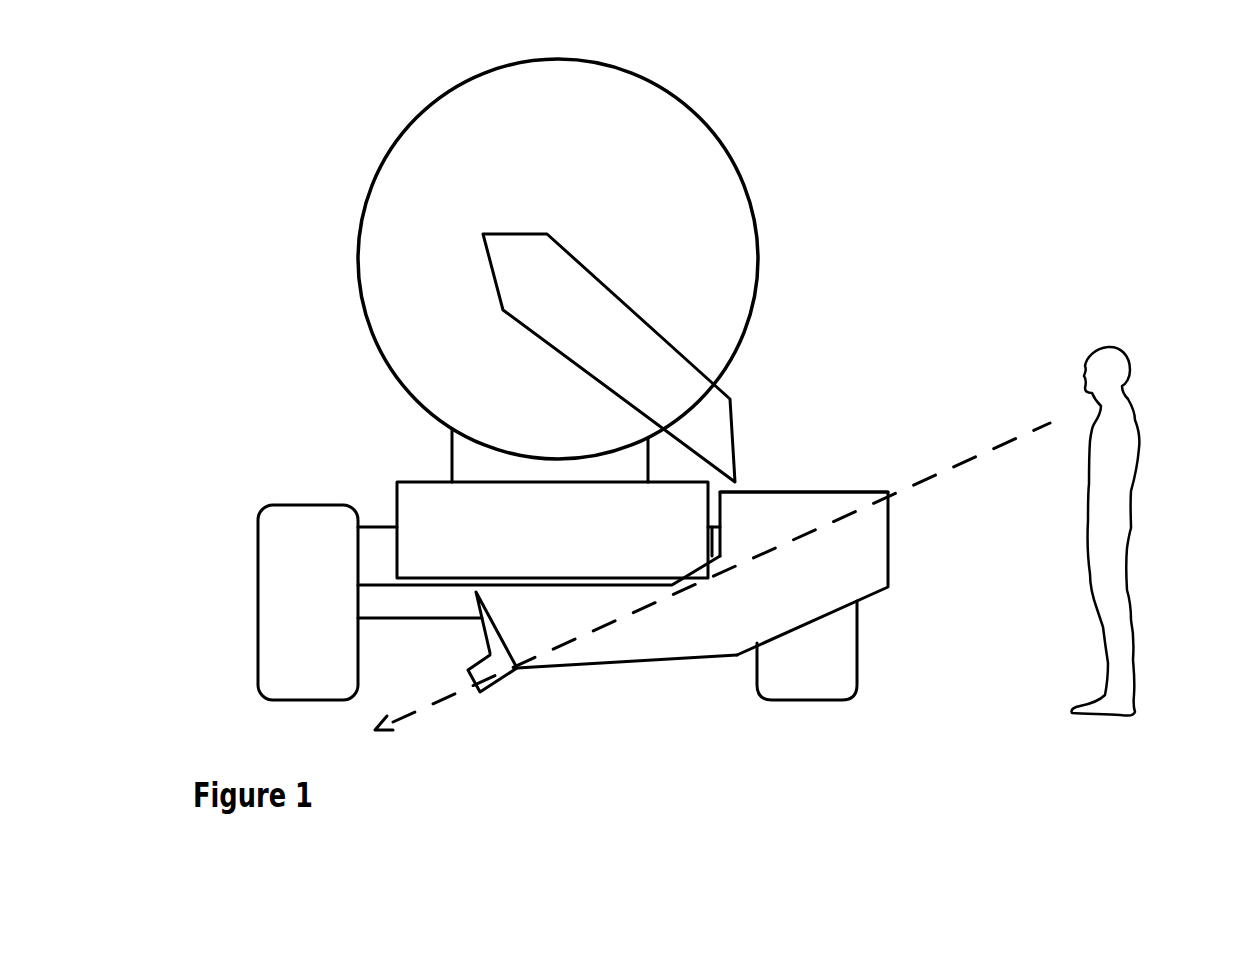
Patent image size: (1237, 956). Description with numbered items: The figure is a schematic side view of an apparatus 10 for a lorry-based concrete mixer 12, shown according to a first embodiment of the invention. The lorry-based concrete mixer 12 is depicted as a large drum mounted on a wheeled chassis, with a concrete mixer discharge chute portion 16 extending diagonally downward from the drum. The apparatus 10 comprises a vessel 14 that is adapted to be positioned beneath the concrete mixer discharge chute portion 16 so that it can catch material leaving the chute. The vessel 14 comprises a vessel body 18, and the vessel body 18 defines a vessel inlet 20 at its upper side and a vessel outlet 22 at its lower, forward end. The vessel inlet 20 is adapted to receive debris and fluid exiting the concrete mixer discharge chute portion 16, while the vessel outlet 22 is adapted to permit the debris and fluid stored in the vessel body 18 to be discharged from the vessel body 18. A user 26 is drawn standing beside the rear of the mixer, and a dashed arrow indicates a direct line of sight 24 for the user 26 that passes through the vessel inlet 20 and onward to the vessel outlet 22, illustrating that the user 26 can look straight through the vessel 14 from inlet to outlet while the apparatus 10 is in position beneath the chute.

The apparatus 10 is at (1006, 227).
The lorry-based concrete mixer 12 is at (700, 198).
The vessel 14 is at (680, 645).
The concrete mixer discharge chute portion 16 is at (712, 416).
The vessel body 18 is at (803, 587).
The vessel inlet 20 is at (877, 510).
The vessel outlet 22 is at (517, 645).
The direct line of sight 24 is at (1006, 438).
The user 26 is at (1139, 468).